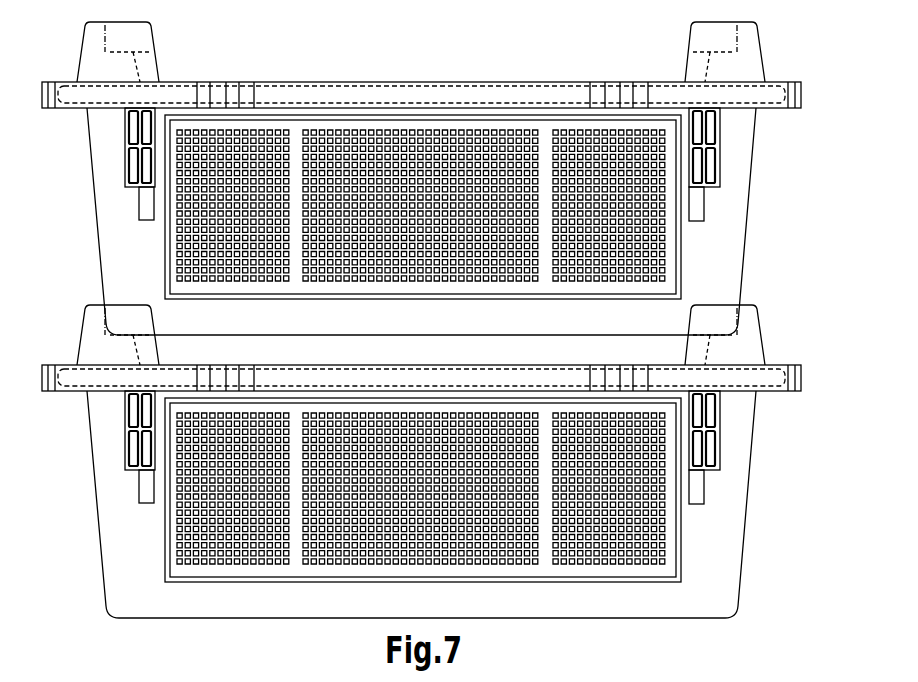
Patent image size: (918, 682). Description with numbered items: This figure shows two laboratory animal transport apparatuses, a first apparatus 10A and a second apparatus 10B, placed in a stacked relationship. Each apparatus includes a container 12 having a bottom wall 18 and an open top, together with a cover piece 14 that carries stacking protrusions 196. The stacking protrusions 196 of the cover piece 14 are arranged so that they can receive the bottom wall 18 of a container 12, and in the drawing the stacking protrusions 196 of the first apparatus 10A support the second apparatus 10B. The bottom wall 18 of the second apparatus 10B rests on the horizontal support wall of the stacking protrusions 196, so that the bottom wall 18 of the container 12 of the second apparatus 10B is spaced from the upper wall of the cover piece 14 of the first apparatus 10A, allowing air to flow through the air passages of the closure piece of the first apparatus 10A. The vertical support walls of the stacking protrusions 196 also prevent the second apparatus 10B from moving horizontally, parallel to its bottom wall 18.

The first apparatus 10A is at (97, 490).
The second apparatus 10B is at (89, 152).
The container 12 is at (750, 230).
The cover piece 14 is at (803, 84).
The bottom wall 18 is at (302, 336).
The stacking protrusions 196 is at (152, 33).